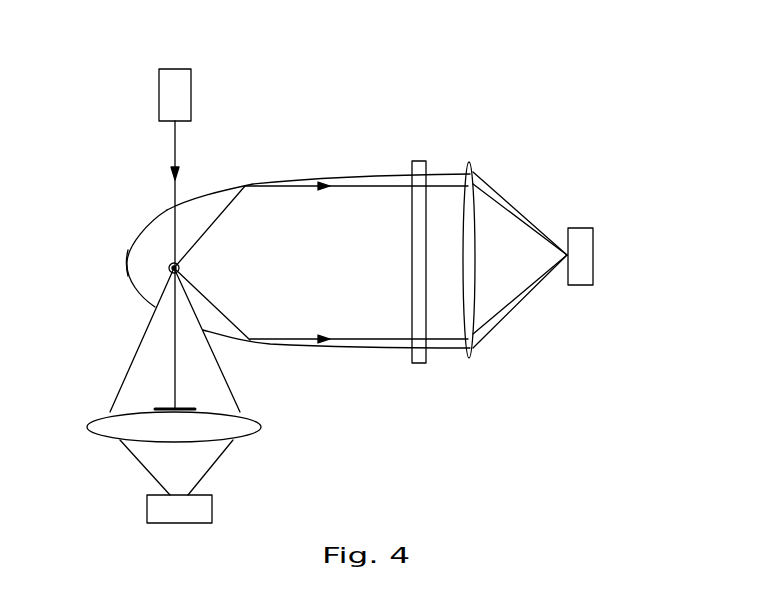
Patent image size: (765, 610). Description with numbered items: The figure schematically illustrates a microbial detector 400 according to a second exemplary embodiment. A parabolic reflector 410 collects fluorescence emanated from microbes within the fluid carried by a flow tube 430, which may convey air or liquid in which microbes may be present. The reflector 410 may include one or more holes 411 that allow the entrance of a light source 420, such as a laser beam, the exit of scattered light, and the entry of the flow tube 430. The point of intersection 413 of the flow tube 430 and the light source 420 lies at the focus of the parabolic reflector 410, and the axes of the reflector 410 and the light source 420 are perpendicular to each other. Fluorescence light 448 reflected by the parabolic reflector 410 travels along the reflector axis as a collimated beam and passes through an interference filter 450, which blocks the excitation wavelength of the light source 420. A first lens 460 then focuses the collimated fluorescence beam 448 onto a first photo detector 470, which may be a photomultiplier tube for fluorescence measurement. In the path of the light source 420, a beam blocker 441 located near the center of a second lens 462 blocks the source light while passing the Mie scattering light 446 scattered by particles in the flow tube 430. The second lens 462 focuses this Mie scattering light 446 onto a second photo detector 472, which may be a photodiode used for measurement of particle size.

The microbial detector 400 is at (291, 86).
The parabolic reflector 410 is at (150, 238).
The holes 411 is at (167, 210).
The point of intersection 413 is at (127, 268).
The light source 420 is at (159, 92).
The flow tube 430 is at (181, 268).
The beam blocker 441 is at (165, 408).
The Mie scattering light 446 is at (235, 393).
The fluorescence light 448 is at (340, 180).
The interference filter 450 is at (427, 168).
The first lens 460 is at (472, 349).
The second lens 462 is at (243, 438).
The first photo detector 470 is at (588, 257).
The second photo detector 472 is at (187, 523).